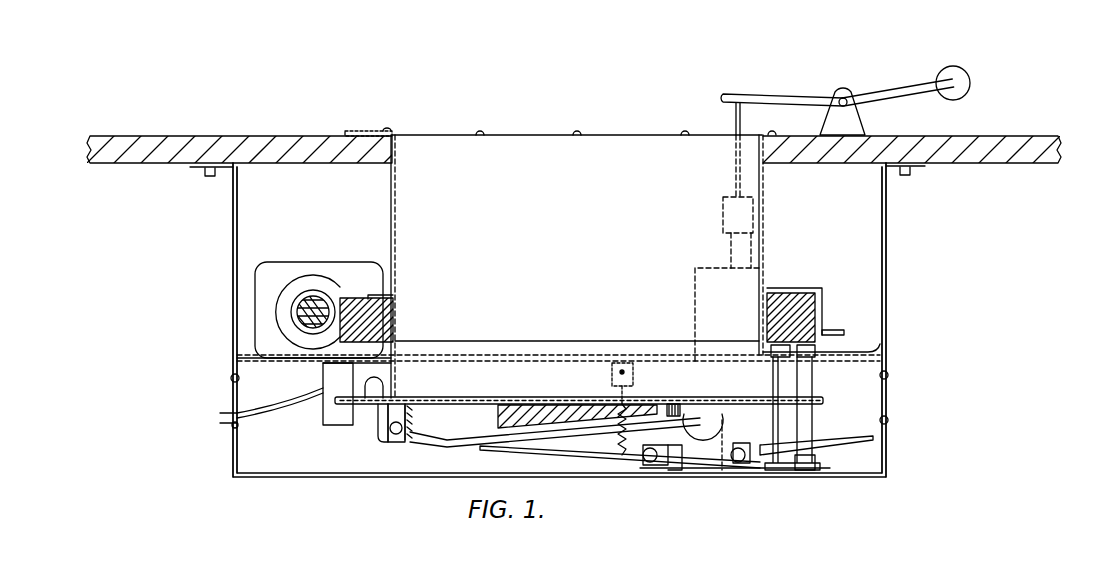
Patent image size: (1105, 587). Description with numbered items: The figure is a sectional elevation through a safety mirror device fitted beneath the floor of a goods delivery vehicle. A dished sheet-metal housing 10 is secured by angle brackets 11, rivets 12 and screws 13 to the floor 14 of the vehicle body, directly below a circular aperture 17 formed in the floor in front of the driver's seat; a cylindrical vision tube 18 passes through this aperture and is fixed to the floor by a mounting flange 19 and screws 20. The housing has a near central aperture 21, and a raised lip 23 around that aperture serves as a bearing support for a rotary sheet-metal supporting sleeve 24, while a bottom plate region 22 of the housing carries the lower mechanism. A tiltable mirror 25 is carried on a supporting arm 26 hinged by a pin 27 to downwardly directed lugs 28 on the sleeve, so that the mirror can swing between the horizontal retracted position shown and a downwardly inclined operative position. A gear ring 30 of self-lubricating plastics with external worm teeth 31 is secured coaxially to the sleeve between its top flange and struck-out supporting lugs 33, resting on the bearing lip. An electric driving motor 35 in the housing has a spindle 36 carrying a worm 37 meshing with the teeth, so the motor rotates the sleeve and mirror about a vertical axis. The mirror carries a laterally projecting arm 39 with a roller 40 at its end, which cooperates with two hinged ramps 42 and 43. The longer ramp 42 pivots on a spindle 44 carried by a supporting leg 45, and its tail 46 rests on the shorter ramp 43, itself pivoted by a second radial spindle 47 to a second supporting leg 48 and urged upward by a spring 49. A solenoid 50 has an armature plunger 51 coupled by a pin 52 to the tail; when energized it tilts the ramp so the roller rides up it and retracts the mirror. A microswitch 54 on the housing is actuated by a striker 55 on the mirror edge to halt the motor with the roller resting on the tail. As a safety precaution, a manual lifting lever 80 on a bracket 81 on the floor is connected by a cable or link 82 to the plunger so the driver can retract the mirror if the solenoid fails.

The dished housing 10 is at (843, 478).
The angle brackets 11 is at (233, 235).
The rivets 12 is at (231, 378).
The screws 13 is at (210, 173).
The floor 14 is at (1000, 135).
The circular aperture 17 is at (550, 129).
The cylindrical vision tube 18 is at (405, 199).
The mounting flange 19 is at (370, 131).
The screws 20 is at (388, 130).
The near central aperture 21 is at (393, 313).
The bottom plate 22 is at (875, 351).
The raised lip 23 is at (800, 357).
The supporting sleeve 24 is at (386, 388).
The tiltable mirror 25 is at (549, 392).
The supporting arm 26 is at (433, 430).
The pin 27 is at (396, 436).
The downwardly directed lugs 28 is at (380, 420).
The gear ring 30 is at (393, 296).
The external worm teeth 31 is at (846, 331).
The supporting lugs 33 is at (792, 413).
The electric driving motor 35 is at (255, 276).
The spindle 36 is at (313, 298).
The worm 37 is at (297, 312).
The laterally projecting arm 39 is at (674, 403).
The roller 40 is at (712, 406).
The ramp 42 is at (805, 470).
The ramp 43 is at (573, 452).
The spindle 44 is at (757, 463).
The supporting leg 45 is at (820, 442).
The tail 46 is at (697, 452).
The second radial spindle 47 is at (640, 458).
The second supporting leg 48 is at (650, 465).
The spring 49 is at (612, 390).
The solenoid 50 is at (693, 310).
The armature plunger 51 is at (725, 360).
The pin 52 is at (722, 470).
The microswitch 54 is at (323, 415).
The striker 55 is at (390, 440).
The manual lifting lever 80 is at (922, 80).
The bracket 81 is at (848, 92).
The cable or link 82 is at (735, 180).